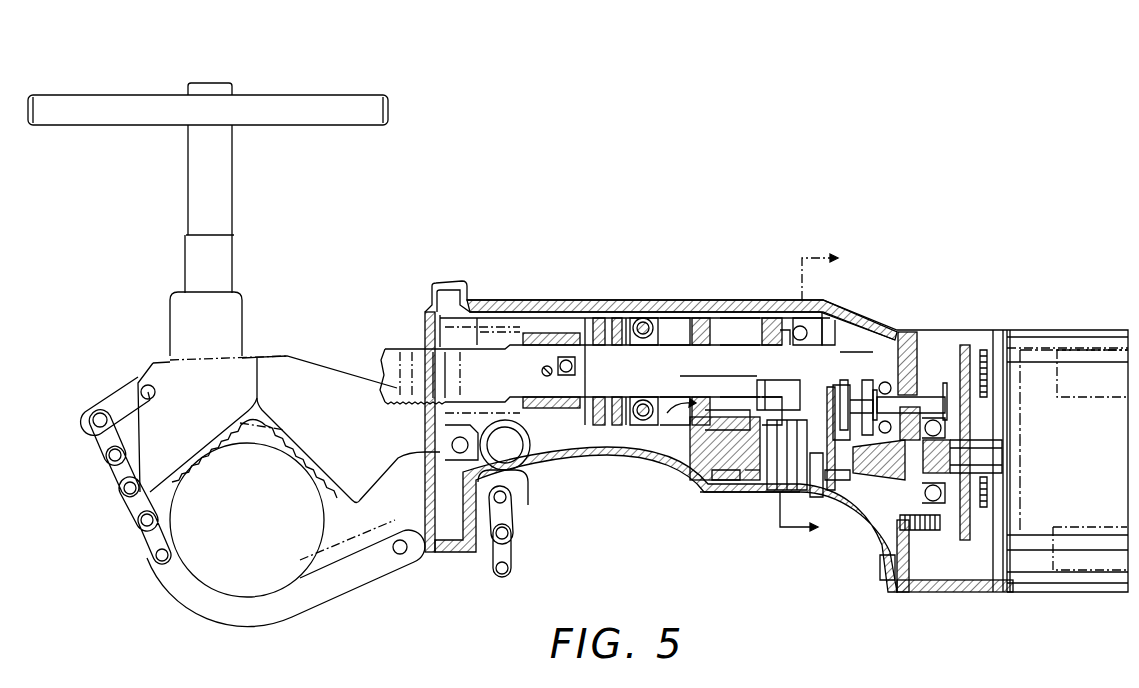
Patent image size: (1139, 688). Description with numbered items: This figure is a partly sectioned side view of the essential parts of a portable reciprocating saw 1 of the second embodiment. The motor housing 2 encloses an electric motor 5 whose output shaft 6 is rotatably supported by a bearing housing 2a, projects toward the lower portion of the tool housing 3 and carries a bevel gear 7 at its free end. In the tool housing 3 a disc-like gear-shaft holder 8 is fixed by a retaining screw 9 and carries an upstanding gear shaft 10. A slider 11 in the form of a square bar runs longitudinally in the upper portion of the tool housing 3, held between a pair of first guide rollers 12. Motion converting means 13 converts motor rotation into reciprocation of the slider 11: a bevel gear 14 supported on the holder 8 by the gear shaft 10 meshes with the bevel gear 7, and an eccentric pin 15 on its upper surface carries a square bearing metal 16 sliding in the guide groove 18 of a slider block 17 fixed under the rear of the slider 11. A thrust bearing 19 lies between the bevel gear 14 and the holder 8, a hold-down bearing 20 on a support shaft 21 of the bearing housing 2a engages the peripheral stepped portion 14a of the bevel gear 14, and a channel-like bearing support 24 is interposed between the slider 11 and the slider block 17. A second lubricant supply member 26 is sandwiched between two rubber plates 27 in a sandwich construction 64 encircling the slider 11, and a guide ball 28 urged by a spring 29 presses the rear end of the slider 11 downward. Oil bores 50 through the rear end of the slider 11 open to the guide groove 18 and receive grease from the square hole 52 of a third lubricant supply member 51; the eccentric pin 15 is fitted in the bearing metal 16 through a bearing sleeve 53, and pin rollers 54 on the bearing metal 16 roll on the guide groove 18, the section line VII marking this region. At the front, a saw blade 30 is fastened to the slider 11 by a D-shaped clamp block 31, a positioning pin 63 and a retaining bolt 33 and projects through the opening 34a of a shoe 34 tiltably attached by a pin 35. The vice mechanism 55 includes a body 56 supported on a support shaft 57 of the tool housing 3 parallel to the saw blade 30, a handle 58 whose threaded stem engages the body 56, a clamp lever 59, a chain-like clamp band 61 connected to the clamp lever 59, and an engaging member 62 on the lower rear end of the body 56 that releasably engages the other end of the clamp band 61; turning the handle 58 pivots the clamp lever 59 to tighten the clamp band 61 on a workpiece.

The portable reciprocating saw 1 is at (495, 290).
The motor housing 2 is at (985, 595).
The bearing housing 2a is at (922, 535).
The tool housing 3 is at (700, 316).
The electric motor 5 is at (1045, 400).
The output shaft 6 is at (1015, 395).
The bevel gear 7 is at (858, 475).
The gear-shaft holder 8 is at (738, 482).
The retaining screw 9 is at (816, 499).
The gear shaft 10 is at (770, 492).
The slider 11 is at (715, 342).
The first guide rollers 12 is at (643, 316).
The motion converting means 13 is at (660, 440).
The bevel gear 14 is at (690, 492).
The peripheral stepped portion 14a is at (690, 470).
The eccentric pin 15 is at (850, 378).
The square bearing metal 16 is at (862, 398).
The slider block 17 is at (870, 378).
The guide groove 18 is at (745, 330).
The thrust bearing 19 is at (715, 482).
The hold-down bearing 20 is at (925, 393).
The support shaft 21 is at (960, 393).
The bearing support 24 is at (796, 328).
The second lubricant supply member 26 is at (640, 420).
The rubber plate 27 is at (595, 316).
The guide ball 28 is at (785, 316).
The spring 29 is at (805, 300).
The saw blade 30 is at (392, 350).
The clamp block 31 is at (540, 330).
The retaining bolt 33 is at (568, 377).
The shoe 34 is at (425, 495).
The opening 34a is at (435, 322).
The pin 35 is at (450, 440).
The oil bores 50 is at (815, 375).
The third lubricant supply member 51 is at (700, 316).
The square hole 52 is at (755, 316).
The bearing sleeve 53 is at (838, 482).
The pin rollers 54 is at (856, 350).
The vice mechanism 55 is at (165, 318).
The body 56 is at (285, 340).
The support shaft 57 is at (512, 462).
The handle 58 is at (278, 128).
The clamp lever 59 is at (120, 400).
The clamp band 61 is at (142, 555).
The engaging member 62 is at (498, 508).
The positioning pin 63 is at (549, 378).
The sandwich construction 64 is at (600, 316).
The section line VII is at (809, 392).